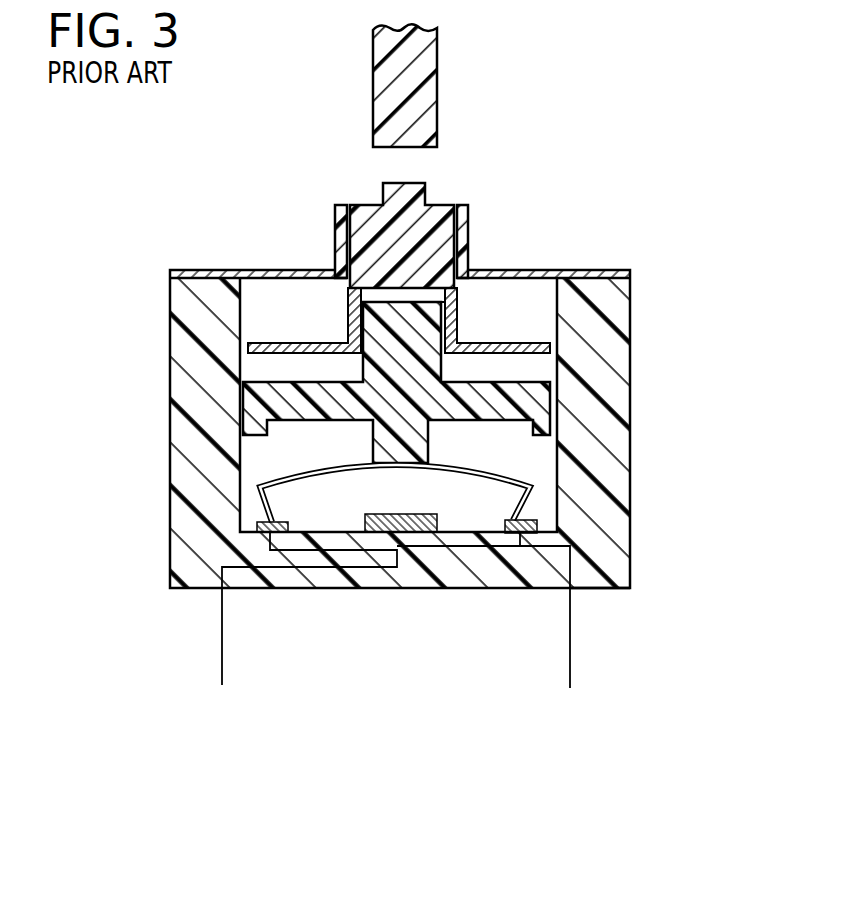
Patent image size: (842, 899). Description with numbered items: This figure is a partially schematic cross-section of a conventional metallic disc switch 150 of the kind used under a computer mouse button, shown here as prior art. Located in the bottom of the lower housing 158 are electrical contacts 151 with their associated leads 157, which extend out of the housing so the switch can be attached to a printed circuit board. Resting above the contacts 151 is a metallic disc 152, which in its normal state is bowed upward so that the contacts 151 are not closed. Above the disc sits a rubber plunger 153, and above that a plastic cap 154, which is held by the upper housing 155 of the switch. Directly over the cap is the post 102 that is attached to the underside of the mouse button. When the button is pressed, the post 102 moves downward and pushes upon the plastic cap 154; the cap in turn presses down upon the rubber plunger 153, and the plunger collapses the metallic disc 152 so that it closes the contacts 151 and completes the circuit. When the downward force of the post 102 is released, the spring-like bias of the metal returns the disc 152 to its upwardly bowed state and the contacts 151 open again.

The post 102 is at (428, 62).
The switch 150 is at (722, 170).
The electrical contacts 151 is at (397, 533).
The metallic disc 152 is at (303, 478).
The rubber plunger 153 is at (272, 401).
The plastic cap 154 is at (352, 288).
The upper housing 155 is at (335, 225).
The leads 157 is at (223, 660).
The lower housing 158 is at (612, 591).